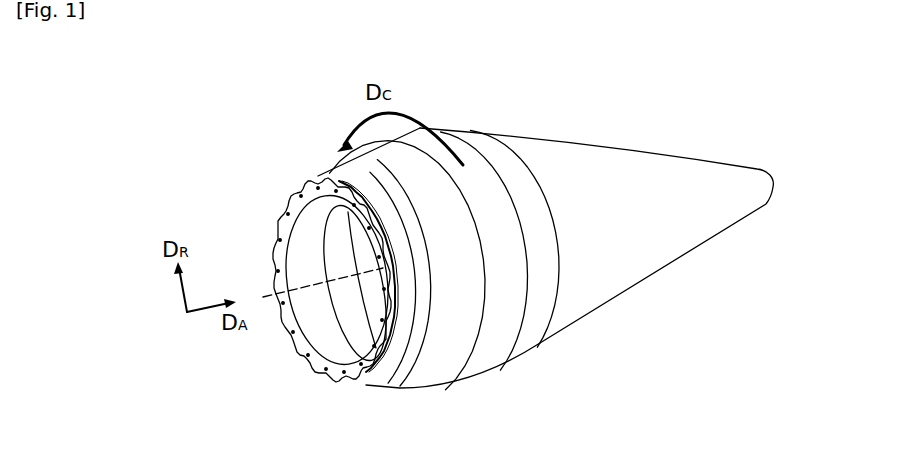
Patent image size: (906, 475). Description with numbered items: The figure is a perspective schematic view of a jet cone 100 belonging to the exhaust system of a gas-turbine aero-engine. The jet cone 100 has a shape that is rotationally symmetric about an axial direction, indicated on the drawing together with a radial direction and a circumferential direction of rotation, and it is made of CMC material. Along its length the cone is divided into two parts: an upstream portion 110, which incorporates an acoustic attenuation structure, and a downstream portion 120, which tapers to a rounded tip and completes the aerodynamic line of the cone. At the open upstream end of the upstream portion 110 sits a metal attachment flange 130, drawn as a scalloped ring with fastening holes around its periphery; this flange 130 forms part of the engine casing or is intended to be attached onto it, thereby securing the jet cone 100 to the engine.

The jet cone 100 is at (527, 112).
The upstream portion 110 is at (482, 380).
The downstream portion 120 is at (662, 272).
The metal attachment flange 130 is at (346, 380).